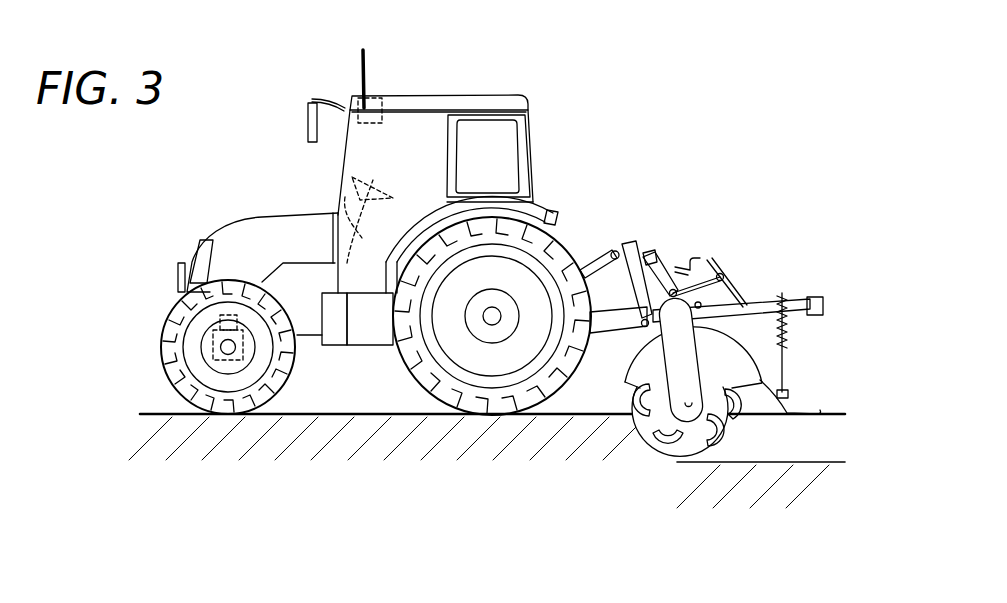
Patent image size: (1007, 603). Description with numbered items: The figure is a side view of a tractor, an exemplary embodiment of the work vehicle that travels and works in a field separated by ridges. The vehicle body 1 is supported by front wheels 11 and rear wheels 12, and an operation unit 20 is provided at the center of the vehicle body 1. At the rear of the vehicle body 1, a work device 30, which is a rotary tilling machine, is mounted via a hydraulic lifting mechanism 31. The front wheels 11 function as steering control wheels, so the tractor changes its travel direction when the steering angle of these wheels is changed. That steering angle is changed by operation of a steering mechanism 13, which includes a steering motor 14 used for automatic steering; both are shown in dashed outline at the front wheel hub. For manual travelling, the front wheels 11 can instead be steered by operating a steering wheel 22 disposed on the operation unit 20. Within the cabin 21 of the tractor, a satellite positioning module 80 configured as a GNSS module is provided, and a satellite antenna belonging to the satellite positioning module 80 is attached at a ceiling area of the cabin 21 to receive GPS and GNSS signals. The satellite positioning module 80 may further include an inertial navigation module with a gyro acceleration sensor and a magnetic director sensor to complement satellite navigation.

The vehicle body 1 is at (337, 355).
The front wheels 11 is at (223, 413).
The rear wheels 12 is at (502, 400).
The steering mechanism 13 is at (205, 348).
The steering motor 14 is at (205, 322).
The operation unit 20 is at (397, 178).
The cabin 21 is at (512, 100).
The steering wheel 22 is at (362, 188).
The work device 30 is at (690, 450).
The hydraulic lifting mechanism 31 is at (643, 238).
The satellite positioning module 80 is at (374, 86).